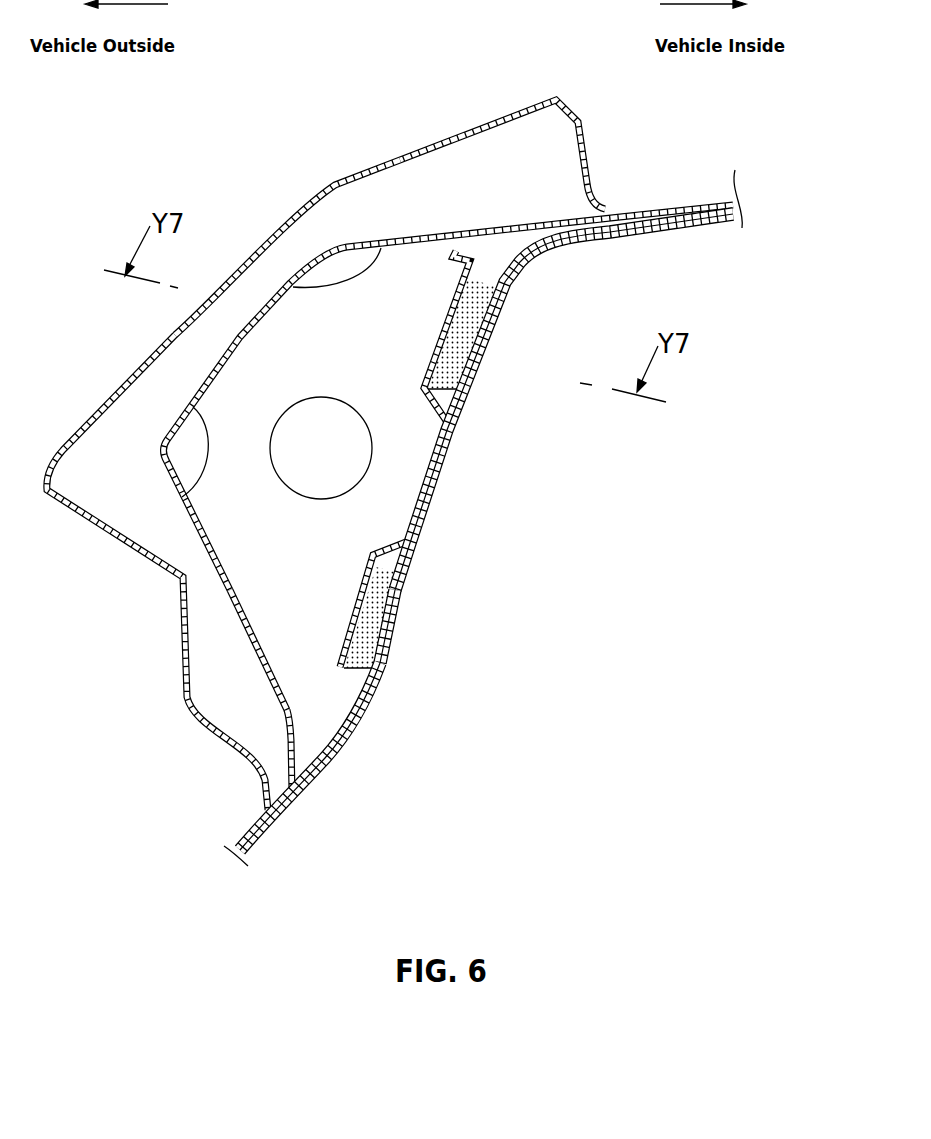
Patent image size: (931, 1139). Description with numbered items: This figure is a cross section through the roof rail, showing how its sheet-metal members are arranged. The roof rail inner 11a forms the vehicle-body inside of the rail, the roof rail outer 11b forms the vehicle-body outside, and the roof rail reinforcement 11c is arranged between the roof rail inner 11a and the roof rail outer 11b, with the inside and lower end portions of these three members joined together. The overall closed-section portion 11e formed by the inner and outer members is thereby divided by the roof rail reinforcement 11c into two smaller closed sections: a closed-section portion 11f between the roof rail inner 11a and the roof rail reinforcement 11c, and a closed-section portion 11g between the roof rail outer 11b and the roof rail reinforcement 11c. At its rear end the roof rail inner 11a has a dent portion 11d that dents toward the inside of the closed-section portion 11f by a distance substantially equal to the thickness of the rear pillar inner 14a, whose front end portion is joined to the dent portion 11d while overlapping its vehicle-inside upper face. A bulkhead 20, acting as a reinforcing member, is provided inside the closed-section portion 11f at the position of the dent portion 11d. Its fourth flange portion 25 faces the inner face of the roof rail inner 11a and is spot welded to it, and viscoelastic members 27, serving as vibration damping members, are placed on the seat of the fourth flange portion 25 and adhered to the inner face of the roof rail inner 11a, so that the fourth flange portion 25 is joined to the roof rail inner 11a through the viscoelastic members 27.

The roof rail inner 11a is at (300, 740).
The roof rail outer 11b is at (101, 530).
The roof rail reinforcement 11c is at (270, 687).
The dent portion 11d is at (412, 641).
The closed-section portion 11e is at (443, 176).
The closed-section portion 11f is at (327, 717).
The closed-section portion 11g is at (352, 213).
The rear pillar inner 14a is at (427, 567).
The bulkhead 20 is at (247, 398).
The fourth flange portion 25 is at (350, 622).
The viscoelastic members 27 is at (460, 357).